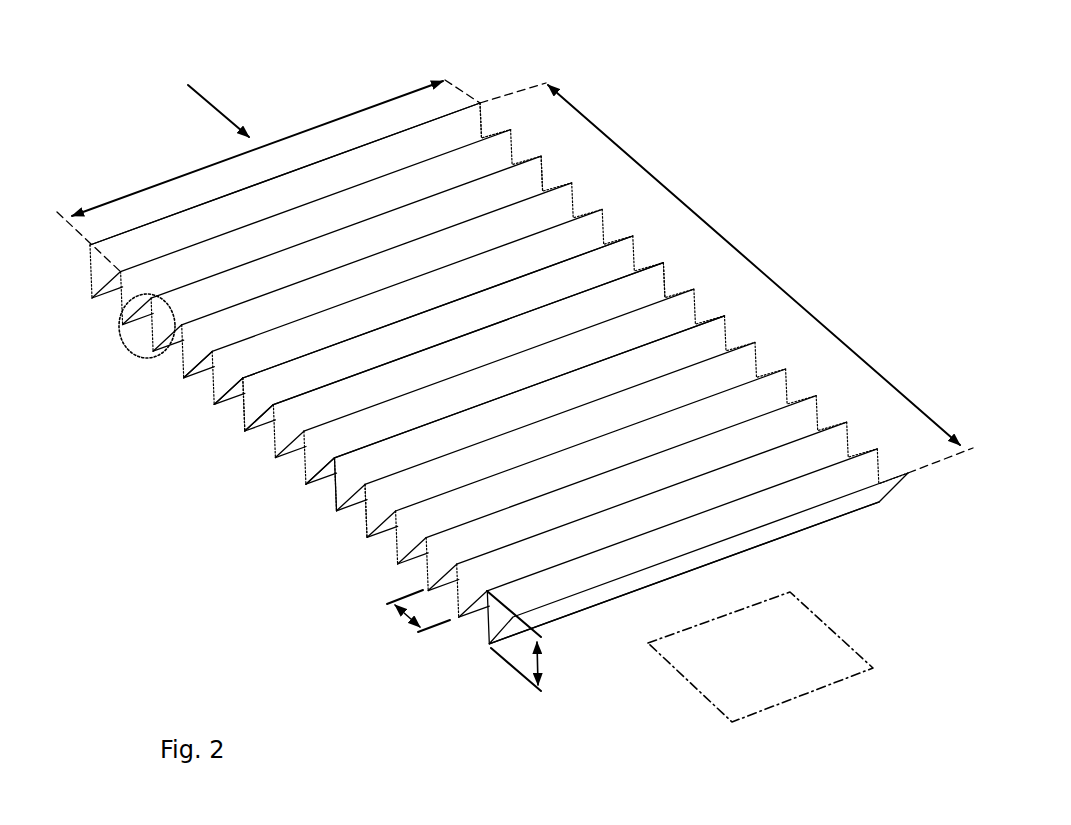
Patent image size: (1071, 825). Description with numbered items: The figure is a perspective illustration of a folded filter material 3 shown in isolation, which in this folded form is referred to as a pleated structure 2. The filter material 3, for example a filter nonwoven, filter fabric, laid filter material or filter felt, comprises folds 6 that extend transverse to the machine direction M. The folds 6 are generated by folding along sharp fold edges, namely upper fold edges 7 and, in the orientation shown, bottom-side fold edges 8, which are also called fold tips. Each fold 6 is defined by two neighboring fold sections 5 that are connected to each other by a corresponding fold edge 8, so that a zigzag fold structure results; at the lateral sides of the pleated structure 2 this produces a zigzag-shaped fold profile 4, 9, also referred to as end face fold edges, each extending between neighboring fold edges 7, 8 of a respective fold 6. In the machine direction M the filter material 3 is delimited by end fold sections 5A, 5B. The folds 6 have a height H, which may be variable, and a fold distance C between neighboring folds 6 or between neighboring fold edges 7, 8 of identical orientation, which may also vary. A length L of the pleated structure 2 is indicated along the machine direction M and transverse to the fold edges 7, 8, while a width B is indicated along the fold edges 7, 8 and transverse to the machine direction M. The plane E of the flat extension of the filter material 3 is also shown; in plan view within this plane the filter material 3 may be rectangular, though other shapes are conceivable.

The pleated structure 2 is at (490, 332).
The filter material 3 is at (689, 343).
The fold profile 4 is at (227, 394).
The fold section 5 is at (243, 400).
The end fold section 5A is at (468, 130).
The end fold section 5B is at (818, 522).
The fold 6 is at (123, 327).
The upper fold edge 7 is at (258, 369).
The bottom-side fold edge 8 is at (231, 403).
The fold profile 9 is at (546, 174).
The width B is at (100, 205).
The machine direction M is at (220, 108).
The length L is at (827, 321).
The fold distance C is at (403, 617).
The height H is at (540, 678).
The plane E is at (717, 708).